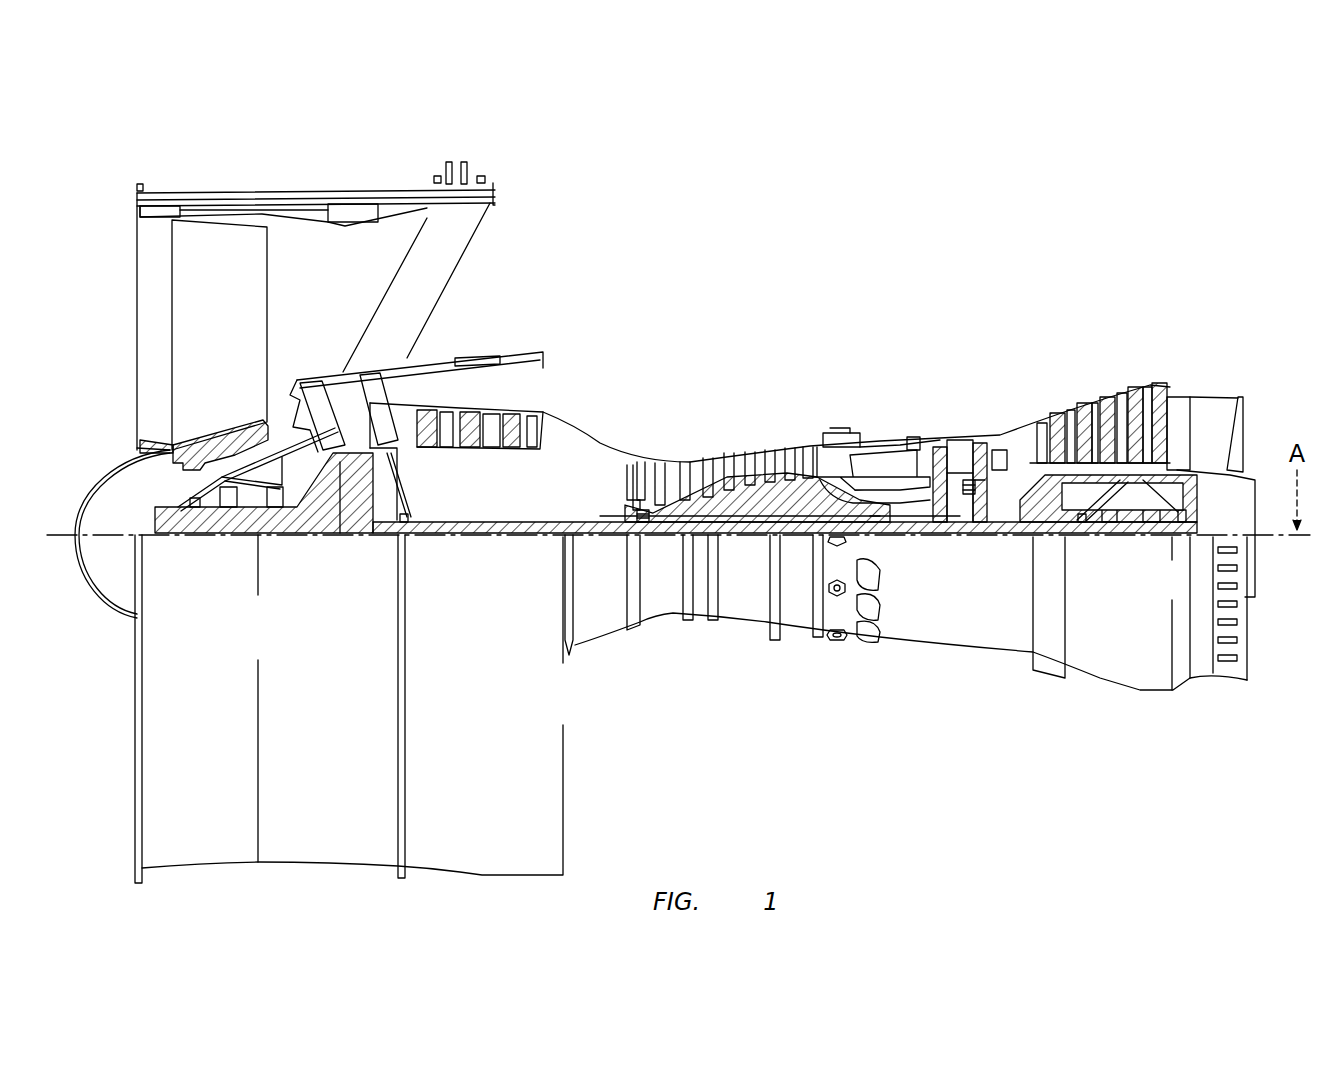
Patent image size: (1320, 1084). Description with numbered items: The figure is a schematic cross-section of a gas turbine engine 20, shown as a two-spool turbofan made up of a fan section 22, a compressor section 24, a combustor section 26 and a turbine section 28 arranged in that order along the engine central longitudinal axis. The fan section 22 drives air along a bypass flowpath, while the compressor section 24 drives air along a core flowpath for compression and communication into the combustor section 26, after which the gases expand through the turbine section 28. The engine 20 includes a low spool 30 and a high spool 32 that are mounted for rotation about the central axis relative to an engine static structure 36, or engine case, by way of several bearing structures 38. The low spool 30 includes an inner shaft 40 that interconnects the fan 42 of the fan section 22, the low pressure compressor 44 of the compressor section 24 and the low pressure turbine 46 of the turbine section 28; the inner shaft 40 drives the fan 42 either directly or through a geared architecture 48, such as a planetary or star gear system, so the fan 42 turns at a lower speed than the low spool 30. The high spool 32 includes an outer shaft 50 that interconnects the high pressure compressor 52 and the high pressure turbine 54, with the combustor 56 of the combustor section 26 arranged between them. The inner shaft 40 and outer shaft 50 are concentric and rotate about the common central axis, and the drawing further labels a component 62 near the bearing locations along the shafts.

The gas turbine engine 20 is at (998, 248).
The fan section 22 is at (130, 175).
The compressor section 24 is at (410, 317).
The combustor section 26 is at (823, 317).
The turbine section 28 is at (1180, 317).
The low spool 30 is at (746, 545).
The high spool 32 is at (793, 497).
The engine static structure 36 is at (800, 648).
The bearing structures 38 is at (435, 592).
The inner shaft 40 is at (592, 532).
The fan 42 is at (230, 321).
The low pressure compressor 44 is at (487, 420).
The low pressure turbine 46 is at (1100, 410).
The geared architecture 48 is at (352, 513).
The outer shaft 50 is at (877, 512).
The high pressure compressor 52 is at (730, 497).
The high pressure turbine 54 is at (960, 440).
The combustor 56 is at (880, 473).
The bearing 62 is at (643, 530).